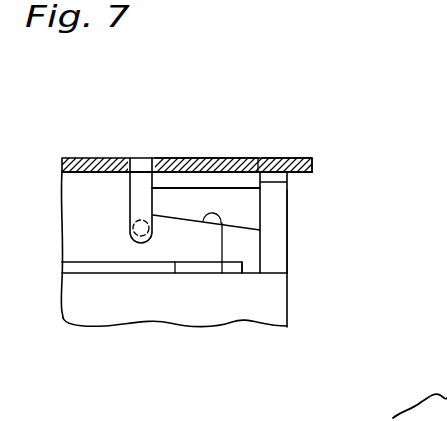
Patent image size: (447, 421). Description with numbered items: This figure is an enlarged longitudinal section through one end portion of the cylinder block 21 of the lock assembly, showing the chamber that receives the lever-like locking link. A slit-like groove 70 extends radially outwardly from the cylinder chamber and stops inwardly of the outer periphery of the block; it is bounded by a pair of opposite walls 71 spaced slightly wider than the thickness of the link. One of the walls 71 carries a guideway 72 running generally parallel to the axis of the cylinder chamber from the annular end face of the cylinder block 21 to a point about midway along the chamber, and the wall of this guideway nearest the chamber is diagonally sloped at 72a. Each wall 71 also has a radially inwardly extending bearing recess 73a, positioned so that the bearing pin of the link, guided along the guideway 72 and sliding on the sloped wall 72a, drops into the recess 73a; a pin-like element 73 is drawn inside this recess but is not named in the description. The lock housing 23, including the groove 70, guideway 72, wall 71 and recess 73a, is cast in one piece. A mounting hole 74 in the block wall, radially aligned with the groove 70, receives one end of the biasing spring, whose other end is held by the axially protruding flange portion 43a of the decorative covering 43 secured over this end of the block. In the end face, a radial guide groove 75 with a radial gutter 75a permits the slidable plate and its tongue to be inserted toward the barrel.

The cylinder block 21 is at (82, 158).
The pin 73 is at (136, 181).
The bearing recess 73a is at (140, 243).
The axially protruding flange portion 43a is at (203, 158).
The mounting hole 74 is at (230, 158).
The radial gutter 75a is at (258, 158).
The decorative covering 43 is at (276, 154).
The radial guide groove 75 is at (312, 177).
The guideway 72 is at (245, 200).
The sloped wall 72a is at (222, 273).
The opposite walls 71 is at (175, 237).
The lock housing 23 is at (288, 218).
The slit-like groove 70 is at (242, 245).